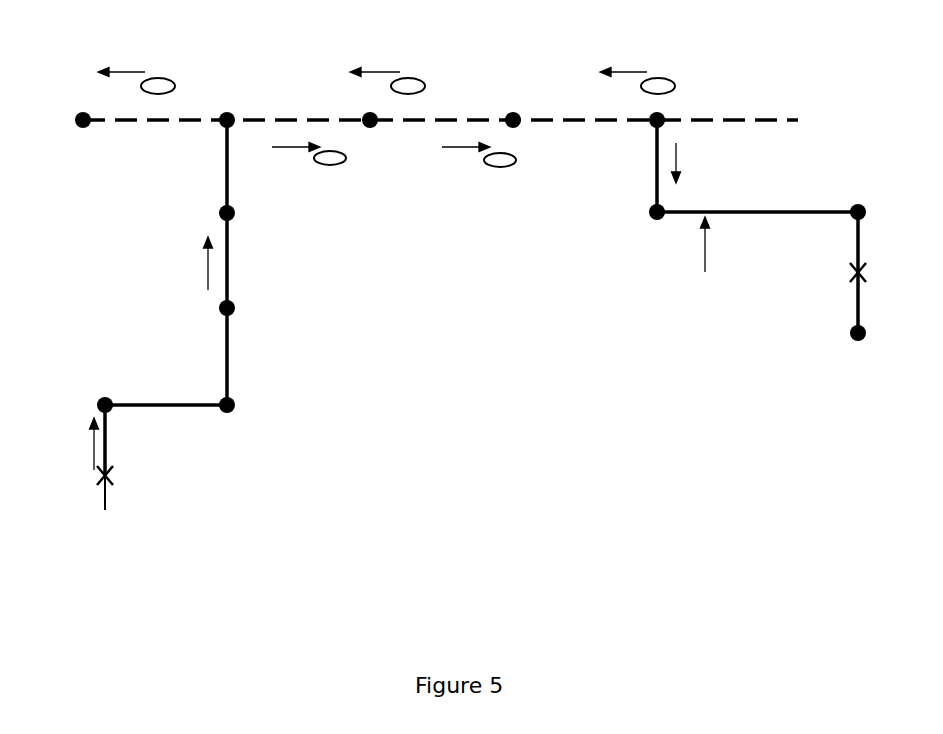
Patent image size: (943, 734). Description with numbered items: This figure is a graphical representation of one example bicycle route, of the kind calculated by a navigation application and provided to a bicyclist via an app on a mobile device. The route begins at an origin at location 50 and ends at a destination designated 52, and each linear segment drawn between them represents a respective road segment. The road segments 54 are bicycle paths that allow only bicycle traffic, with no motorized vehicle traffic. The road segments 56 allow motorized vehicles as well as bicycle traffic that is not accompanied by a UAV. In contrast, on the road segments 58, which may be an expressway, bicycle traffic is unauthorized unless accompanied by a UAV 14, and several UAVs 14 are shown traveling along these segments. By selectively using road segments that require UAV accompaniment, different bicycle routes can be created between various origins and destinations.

The UAV 14 is at (426, 81).
The origin 50 is at (130, 475).
The destination 52 is at (880, 272).
The road segments 54 is at (175, 397).
The road segments 56 is at (245, 176).
The road segments 58 is at (762, 112).